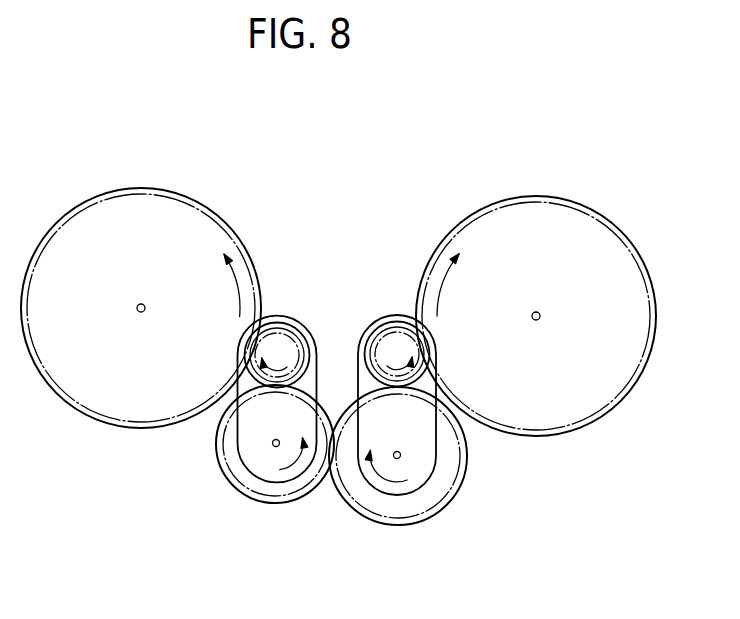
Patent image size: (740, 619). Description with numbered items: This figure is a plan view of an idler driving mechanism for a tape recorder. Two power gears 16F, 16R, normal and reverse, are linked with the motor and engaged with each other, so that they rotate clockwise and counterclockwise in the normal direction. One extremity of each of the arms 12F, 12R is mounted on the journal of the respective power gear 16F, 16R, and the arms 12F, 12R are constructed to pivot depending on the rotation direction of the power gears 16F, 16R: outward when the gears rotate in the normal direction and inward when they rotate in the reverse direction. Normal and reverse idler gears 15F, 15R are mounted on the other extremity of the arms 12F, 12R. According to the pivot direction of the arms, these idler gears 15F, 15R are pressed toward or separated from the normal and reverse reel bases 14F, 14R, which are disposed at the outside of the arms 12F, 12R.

The reverse reel base 14R is at (168, 205).
The normal reel base 14F is at (522, 213).
The reverse idler gear 15R is at (287, 338).
The normal idler gear 15F is at (393, 337).
The reverse arm 12R is at (262, 428).
The normal arm 12F is at (420, 438).
The reverse power gear 16R is at (253, 483).
The normal power gear 16F is at (440, 483).